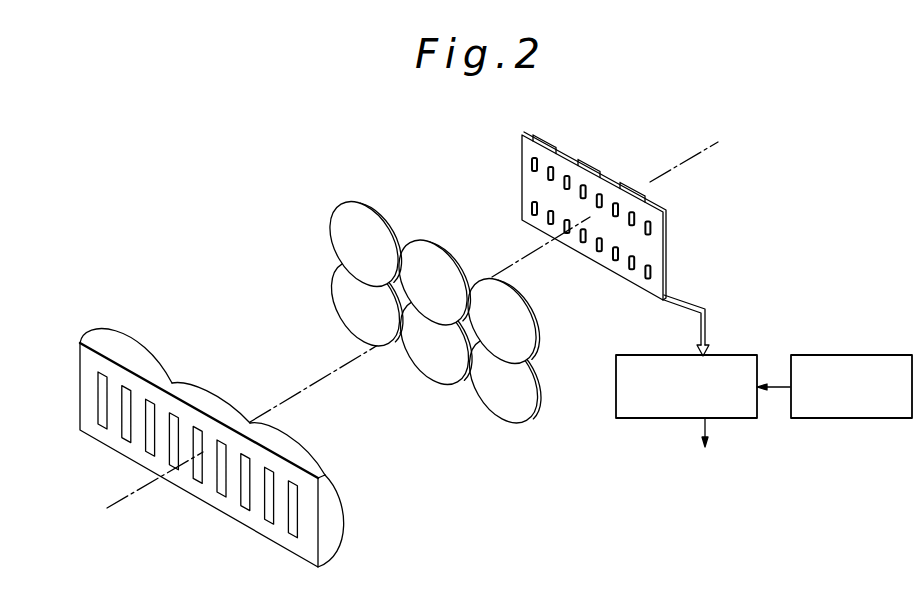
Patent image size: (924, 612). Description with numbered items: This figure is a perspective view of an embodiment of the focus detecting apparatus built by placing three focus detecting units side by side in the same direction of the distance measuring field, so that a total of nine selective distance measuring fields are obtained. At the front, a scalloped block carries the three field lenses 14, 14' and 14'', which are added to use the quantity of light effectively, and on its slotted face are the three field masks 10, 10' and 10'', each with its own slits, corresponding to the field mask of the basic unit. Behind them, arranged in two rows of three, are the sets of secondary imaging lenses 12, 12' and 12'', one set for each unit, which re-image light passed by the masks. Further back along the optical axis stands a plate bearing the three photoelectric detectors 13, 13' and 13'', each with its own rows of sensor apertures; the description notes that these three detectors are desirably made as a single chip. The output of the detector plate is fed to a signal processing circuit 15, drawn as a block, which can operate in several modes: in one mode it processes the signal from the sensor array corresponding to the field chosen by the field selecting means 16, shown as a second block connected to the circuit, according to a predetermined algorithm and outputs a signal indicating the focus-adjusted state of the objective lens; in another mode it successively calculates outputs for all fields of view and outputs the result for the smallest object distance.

The field mask 10 is at (123, 434).
The field mask 10' is at (193, 473).
The field mask 10'' is at (267, 516).
The set of secondary imaging lenses 12 is at (365, 263).
The set of secondary imaging lenses 12' is at (434, 302).
The set of secondary imaging lenses 12'' is at (520, 351).
The photoelectric detector 13 is at (594, 208).
The photoelectric detector 13' is at (601, 200).
The photoelectric detector 13'' is at (642, 220).
The field lens 14 is at (212, 447).
The field lens 14' is at (211, 390).
The field lens 14'' is at (305, 449).
The signal processing circuit 15 is at (733, 354).
The field selecting means 16 is at (852, 354).